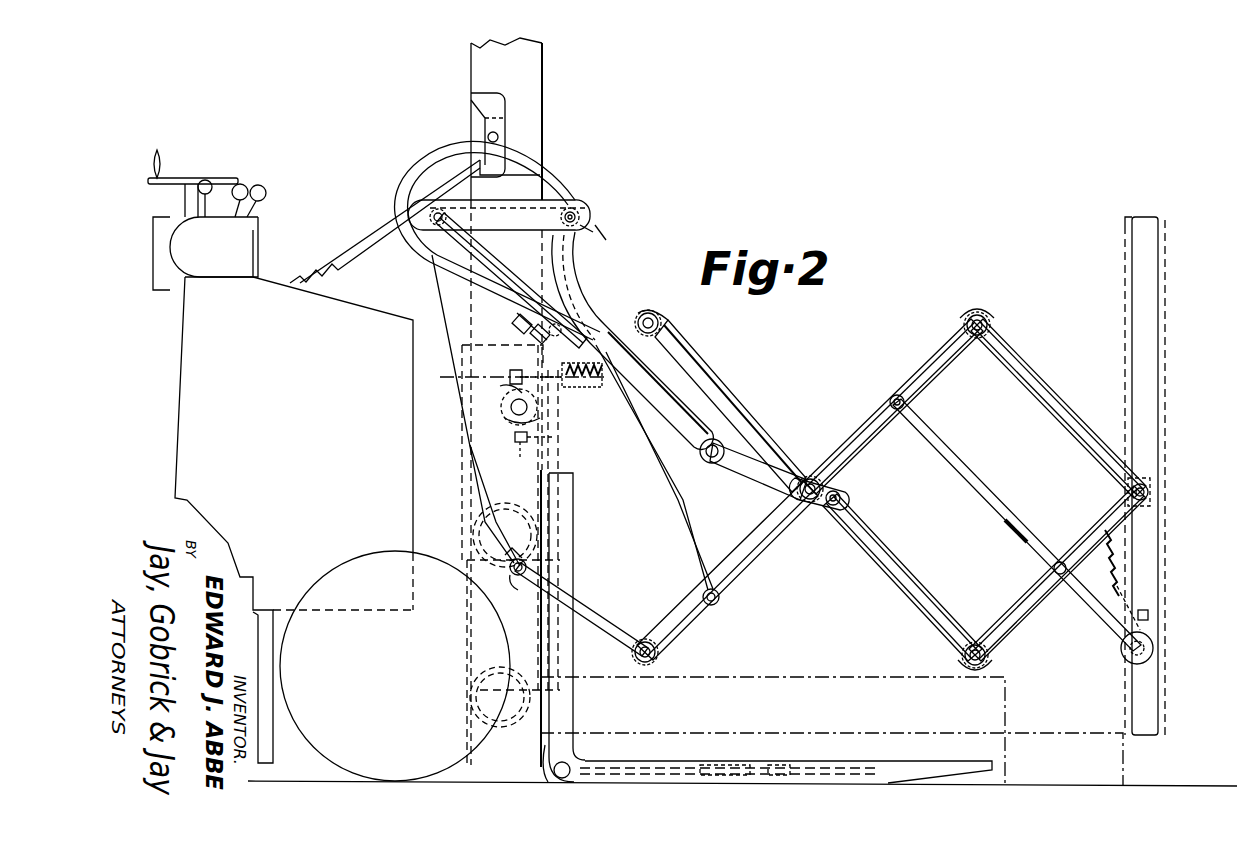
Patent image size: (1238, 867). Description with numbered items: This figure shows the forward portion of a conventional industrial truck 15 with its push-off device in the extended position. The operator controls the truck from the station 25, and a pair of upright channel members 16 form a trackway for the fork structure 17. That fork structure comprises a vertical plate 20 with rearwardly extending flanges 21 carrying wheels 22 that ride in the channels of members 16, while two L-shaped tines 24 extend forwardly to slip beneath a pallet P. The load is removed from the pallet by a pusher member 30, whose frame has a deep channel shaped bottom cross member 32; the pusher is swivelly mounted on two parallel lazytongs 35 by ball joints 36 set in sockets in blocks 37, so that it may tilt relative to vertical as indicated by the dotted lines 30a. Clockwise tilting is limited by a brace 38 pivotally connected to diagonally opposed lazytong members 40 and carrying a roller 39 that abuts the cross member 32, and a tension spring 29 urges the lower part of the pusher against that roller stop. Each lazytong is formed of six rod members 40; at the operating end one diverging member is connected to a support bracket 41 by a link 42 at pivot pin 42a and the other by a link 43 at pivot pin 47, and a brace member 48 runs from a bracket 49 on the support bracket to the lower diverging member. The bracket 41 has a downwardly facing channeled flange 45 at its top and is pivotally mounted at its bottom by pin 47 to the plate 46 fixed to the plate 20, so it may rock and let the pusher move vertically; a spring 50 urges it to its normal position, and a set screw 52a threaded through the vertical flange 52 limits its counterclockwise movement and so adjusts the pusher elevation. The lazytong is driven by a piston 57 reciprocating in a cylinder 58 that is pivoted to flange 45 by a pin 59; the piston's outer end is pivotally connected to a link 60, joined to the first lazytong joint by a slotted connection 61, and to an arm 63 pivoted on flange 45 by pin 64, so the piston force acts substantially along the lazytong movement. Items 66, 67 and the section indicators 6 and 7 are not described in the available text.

The industrial truck 15 is at (276, 372).
The upright channel members 16 is at (542, 90).
The fork structure 17 is at (558, 713).
The vertical plate 20 is at (565, 695).
The rearwardly extending flanges 21 is at (480, 635).
The wheels 22 is at (475, 528).
The L-shaped tines 24 is at (640, 760).
The operator station 25 is at (250, 172).
The tension spring 29 is at (1120, 578).
The pusher member 30 is at (1156, 206).
The tilted pusher position 30a is at (1122, 248).
The bottom cross member 32 is at (1165, 690).
The lazytongs 35 is at (928, 347).
The ball joints 36 is at (1155, 492).
The blocks 37 is at (1115, 470).
The brace 38 is at (990, 518).
The roller 39 is at (1120, 650).
The rod members 40 is at (730, 385).
The support bracket 41 is at (498, 463).
The link 42 is at (520, 396).
The pivot pin 42a is at (516, 437).
The link 43 is at (585, 602).
The channeled flange 45 is at (575, 200).
The plate 46 is at (470, 452).
The pivot pin 47 is at (516, 580).
The brace member 48 is at (677, 508).
The bracket 49 is at (518, 328).
The spring 50 is at (622, 312).
The vertical flange 52 is at (540, 362).
The set screw 52a is at (518, 455).
The piston 57 is at (696, 442).
The cylinder 58 is at (493, 262).
The pin 59 is at (406, 197).
The link 60 is at (780, 455).
The slotted connection 61 is at (814, 502).
The arm 63 is at (580, 287).
The pin 64 is at (598, 214).
The hose 66 is at (420, 262).
The bracket 67 is at (522, 173).
The pallet P is at (885, 715).
The section line 6- 6 is at (536, 740).
The section line 7- 7 is at (440, 377).